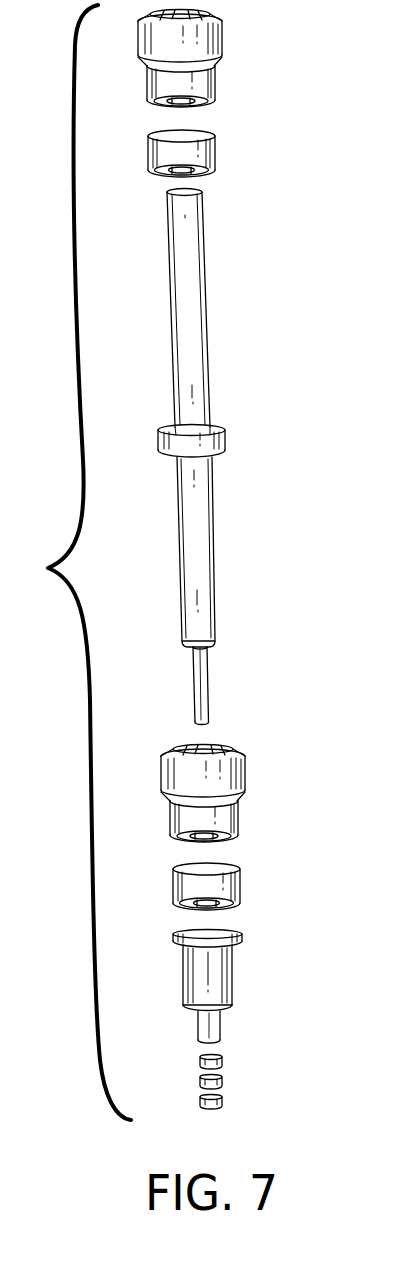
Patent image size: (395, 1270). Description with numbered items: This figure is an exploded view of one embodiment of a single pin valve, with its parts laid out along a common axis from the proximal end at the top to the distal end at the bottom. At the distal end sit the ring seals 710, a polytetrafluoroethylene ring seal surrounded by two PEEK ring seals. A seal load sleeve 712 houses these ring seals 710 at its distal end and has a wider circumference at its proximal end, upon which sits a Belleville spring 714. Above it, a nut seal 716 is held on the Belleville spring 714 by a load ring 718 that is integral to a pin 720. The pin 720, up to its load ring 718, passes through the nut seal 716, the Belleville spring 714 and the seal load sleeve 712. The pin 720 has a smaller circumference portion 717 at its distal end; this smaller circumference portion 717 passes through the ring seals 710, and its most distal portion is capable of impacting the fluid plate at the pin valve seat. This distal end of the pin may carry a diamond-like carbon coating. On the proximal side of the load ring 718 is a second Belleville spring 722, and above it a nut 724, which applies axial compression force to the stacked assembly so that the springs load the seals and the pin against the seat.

The ring seals 710 is at (231, 1052).
The seal load sleeve 712 is at (233, 972).
The Belleville spring 714 is at (240, 882).
The nut seal 716 is at (245, 771).
The smaller circumference portion 717 is at (209, 677).
The load ring 718 is at (225, 428).
The pin 720 is at (215, 537).
The second Belleville spring 722 is at (215, 150).
The nut 724 is at (222, 38).